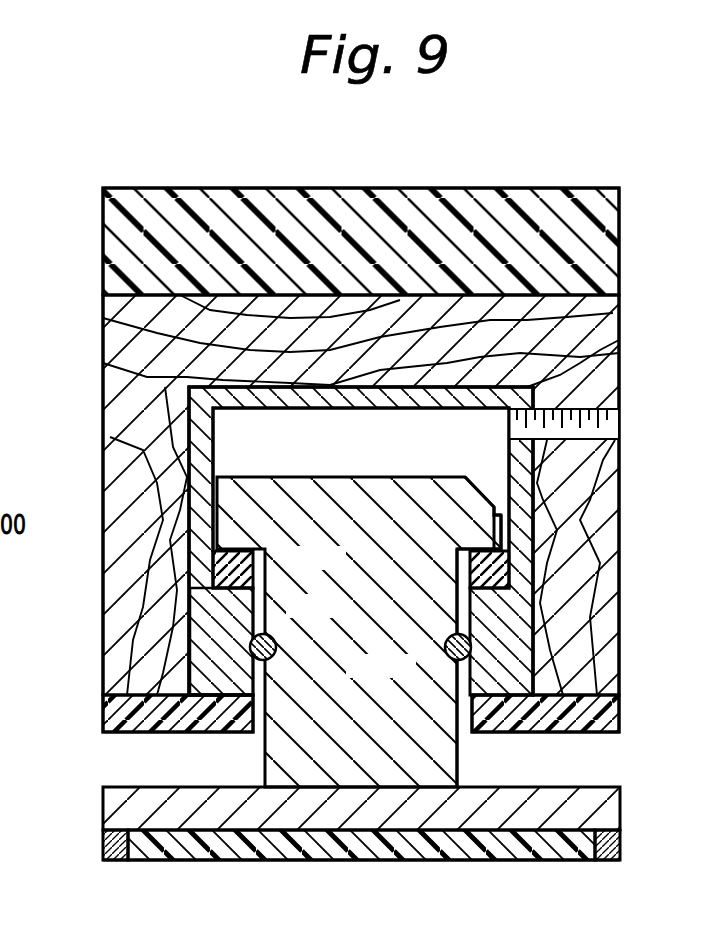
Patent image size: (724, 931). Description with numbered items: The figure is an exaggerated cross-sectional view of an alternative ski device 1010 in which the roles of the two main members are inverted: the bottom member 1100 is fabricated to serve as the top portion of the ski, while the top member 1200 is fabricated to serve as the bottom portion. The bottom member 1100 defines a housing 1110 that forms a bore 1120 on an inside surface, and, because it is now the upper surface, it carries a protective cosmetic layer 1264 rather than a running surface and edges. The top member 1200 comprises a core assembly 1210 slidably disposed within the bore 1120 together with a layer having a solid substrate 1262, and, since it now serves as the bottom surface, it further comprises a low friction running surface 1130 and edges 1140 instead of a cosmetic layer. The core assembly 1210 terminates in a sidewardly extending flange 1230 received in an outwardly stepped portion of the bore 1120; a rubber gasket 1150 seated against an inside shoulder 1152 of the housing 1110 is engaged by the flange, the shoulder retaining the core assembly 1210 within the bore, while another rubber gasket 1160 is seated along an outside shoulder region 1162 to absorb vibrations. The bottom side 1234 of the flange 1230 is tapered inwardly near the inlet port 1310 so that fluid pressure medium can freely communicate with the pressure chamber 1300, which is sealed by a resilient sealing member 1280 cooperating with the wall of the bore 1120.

The ski device 1010 is at (550, 144).
The protective cosmetic layer 1264 is at (608, 247).
The bottom member 1100 is at (90, 396).
The housing 1110 is at (176, 449).
The inside shoulder 1152 is at (227, 600).
The outside shoulder region 1162 is at (220, 686).
The rubber gasket 1160 is at (133, 713).
The inlet port 1310 is at (613, 418).
The bore 1120 is at (265, 613).
The bottom side of flange 1234 is at (490, 498).
The sidewardly extending flange 1230 is at (487, 528).
The core assembly 1210 is at (458, 737).
The pressure chamber 1300 is at (378, 441).
The rubber gasket 1150 is at (265, 565).
The resilient sealing member 1280 is at (444, 652).
The solid substrate 1262 is at (607, 800).
The top member 1200 is at (336, 864).
The edges 1140 is at (607, 848).
The low friction running surface 1130 is at (553, 862).